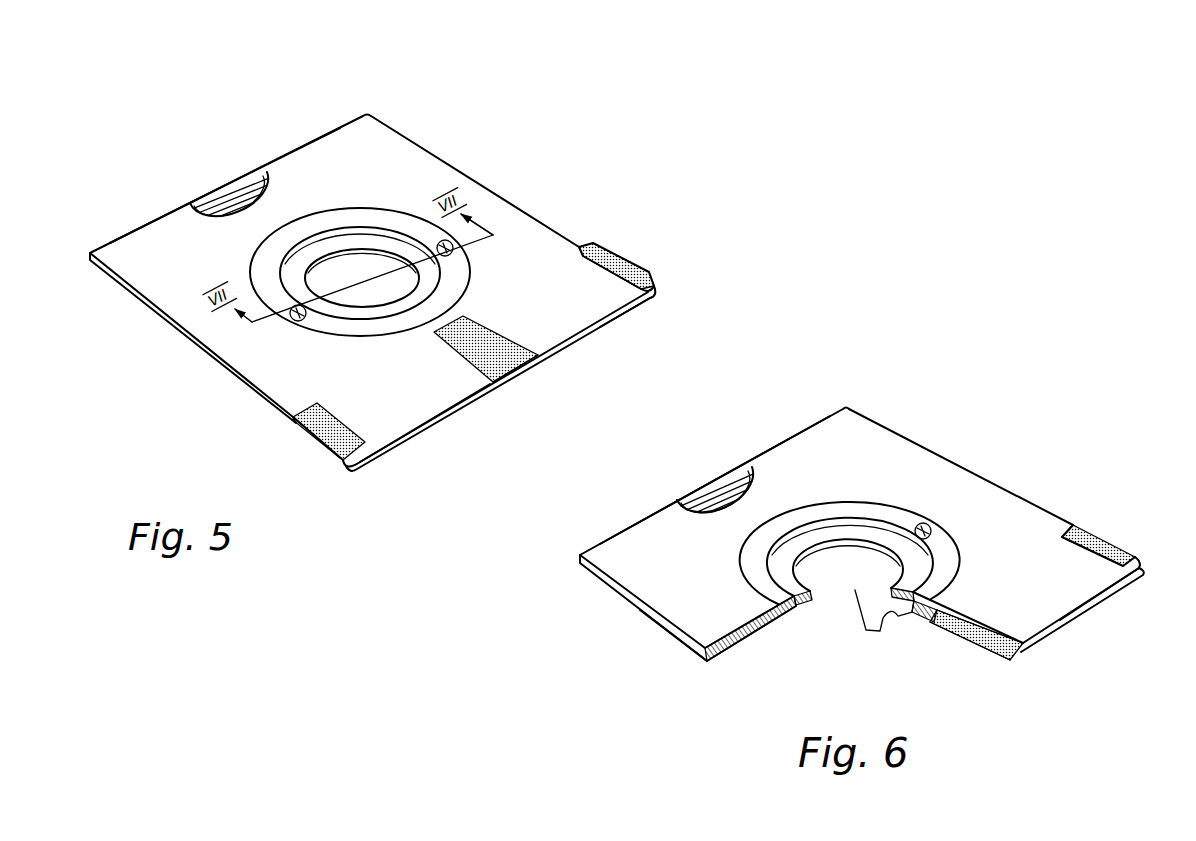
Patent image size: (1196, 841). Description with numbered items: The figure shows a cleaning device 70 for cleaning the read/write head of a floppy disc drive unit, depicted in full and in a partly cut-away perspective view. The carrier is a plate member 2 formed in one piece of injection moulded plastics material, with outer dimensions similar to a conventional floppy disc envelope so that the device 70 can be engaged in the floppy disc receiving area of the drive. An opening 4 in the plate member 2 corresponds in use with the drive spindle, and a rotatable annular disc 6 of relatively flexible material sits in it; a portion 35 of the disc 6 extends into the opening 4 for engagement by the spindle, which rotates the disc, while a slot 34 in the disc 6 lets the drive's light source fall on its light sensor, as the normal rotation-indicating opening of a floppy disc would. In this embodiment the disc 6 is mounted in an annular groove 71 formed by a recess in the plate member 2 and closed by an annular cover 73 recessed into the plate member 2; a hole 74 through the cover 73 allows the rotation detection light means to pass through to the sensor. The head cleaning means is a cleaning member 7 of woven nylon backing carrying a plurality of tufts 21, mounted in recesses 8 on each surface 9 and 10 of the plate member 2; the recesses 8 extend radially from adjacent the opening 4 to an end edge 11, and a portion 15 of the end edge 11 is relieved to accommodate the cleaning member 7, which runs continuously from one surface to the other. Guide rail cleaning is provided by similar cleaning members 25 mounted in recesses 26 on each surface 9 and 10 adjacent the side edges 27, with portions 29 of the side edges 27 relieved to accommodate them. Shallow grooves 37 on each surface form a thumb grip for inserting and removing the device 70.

In FIG. 5, the plate member 2 is at (583, 313).
In FIG. 6, the plate member 2 is at (930, 465).
In FIG. 5, the opening 4 is at (382, 262).
In FIG. 6, the opening 4 is at (833, 560).
In FIG. 5, the rotatable annular disc 6 is at (370, 233).
In FIG. 6, the rotatable annular disc 6 is at (833, 557).
In FIG. 5, the cleaning member 7 is at (493, 347).
In FIG. 6, the cleaning member 7 is at (993, 637).
In FIG. 6, the recesses 8 is at (962, 615).
In FIG. 5, the surface 9 is at (557, 257).
In FIG. 6, the surface 9 is at (640, 570).
In FIG. 5, the surface 10 is at (633, 303).
In FIG. 6, the surface 10 is at (733, 648).
In FIG. 5, the end edge 11 is at (422, 430).
In FIG. 6, the end edge 11 is at (1092, 600).
In FIG. 5, the portion of the end edge 15 is at (507, 373).
In FIG. 6, the portion of the end edge 15 is at (1013, 653).
In FIG. 5, the tufts 21 is at (600, 257).
In FIG. 6, the tufts 21 is at (1112, 552).
In FIG. 5, the cleaning members 25 is at (637, 263).
In FIG. 6, the cleaning members 25 is at (1087, 540).
In FIG. 6, the recesses 26 is at (1130, 548).
In FIG. 5, the side edges 27 is at (513, 197).
In FIG. 6, the side edges 27 is at (1012, 495).
In FIG. 5, the portions 29 is at (620, 270).
In FIG. 6, the slot 34 is at (893, 625).
In FIG. 5, the portion of the disc 35 is at (335, 240).
In FIG. 6, the portion of the disc 35 is at (886, 540).
In FIG. 5, the shallow grooves 37 is at (233, 185).
In FIG. 6, the shallow grooves 37 is at (703, 482).
In FIG. 5, the cleaning device 70 is at (581, 144).
In FIG. 6, the cleaning device 70 is at (611, 717).
In FIG. 6, the annular groove 71 is at (788, 613).
In FIG. 5, the annular cover 73 is at (457, 283).
In FIG. 6, the annular cover 73 is at (945, 562).
In FIG. 5, the hole 74 is at (443, 243).
In FIG. 6, the hole 74 is at (930, 528).